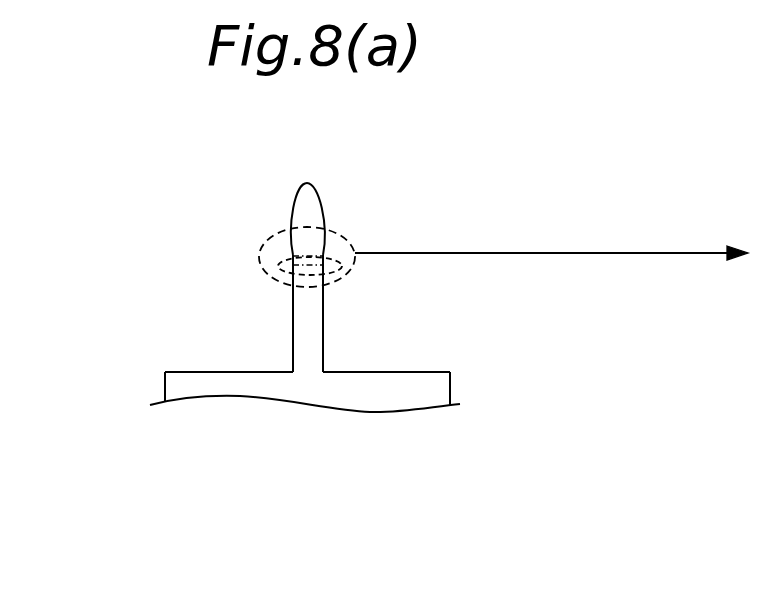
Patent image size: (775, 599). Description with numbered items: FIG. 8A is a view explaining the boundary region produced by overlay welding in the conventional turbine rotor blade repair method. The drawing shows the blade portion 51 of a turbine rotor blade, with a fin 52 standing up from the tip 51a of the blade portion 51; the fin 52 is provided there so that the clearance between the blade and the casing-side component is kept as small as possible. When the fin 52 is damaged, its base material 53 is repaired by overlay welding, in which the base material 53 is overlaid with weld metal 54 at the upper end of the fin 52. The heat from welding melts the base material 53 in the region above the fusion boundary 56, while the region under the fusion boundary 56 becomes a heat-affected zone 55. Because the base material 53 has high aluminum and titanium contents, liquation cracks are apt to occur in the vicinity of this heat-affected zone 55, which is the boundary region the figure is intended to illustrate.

The blade portion 51 is at (432, 397).
The tip of blade portion 51a is at (430, 372).
The fin 52 is at (322, 315).
The base material 53 is at (566, 291).
The weld metal 54 is at (318, 208).
The heat-affected zone 55 is at (345, 268).
The fusion boundary 56 is at (305, 259).